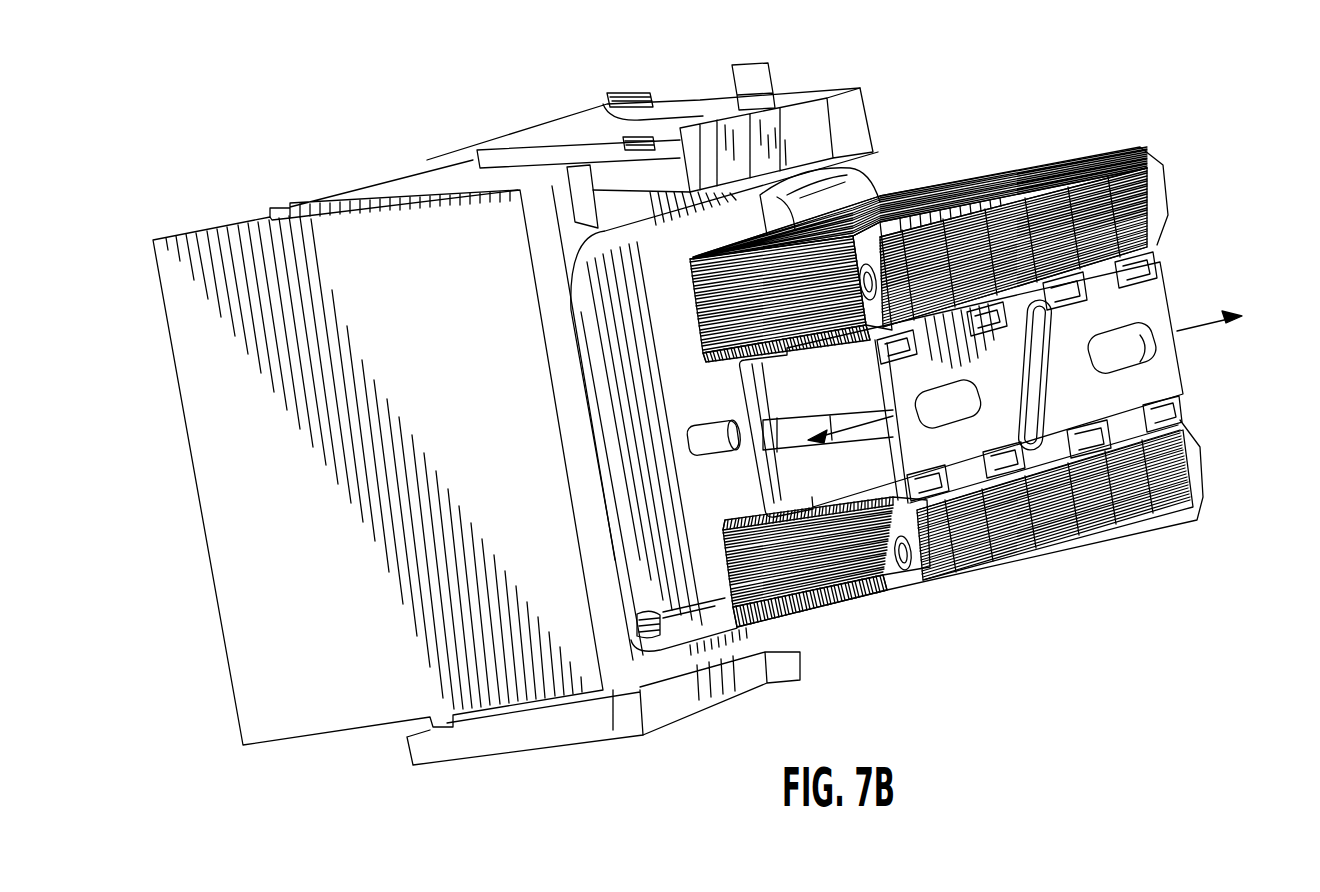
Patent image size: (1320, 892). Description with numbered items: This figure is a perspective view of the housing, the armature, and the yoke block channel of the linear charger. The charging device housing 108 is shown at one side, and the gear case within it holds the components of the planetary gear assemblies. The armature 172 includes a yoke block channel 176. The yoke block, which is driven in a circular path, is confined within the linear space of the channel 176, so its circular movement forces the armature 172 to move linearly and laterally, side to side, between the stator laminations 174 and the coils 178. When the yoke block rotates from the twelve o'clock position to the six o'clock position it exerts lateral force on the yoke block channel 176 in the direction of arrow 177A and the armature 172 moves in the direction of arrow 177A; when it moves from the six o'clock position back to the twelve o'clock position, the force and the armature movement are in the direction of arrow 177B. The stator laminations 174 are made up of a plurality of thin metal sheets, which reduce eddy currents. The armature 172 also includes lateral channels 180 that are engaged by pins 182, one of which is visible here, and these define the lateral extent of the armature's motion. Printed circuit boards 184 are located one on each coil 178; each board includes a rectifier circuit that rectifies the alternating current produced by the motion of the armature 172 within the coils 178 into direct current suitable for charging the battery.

The charging device housing 108 is at (216, 443).
The armature 172 is at (867, 490).
The stator laminations 174 is at (1005, 168).
The yoke block channel 176 is at (1027, 352).
The arrow 177A is at (1200, 333).
The arrow 177B is at (867, 420).
The coils 178 is at (1160, 197).
The lateral channels 180 is at (975, 487).
The pins 182 is at (713, 430).
The printed circuit boards 184 is at (910, 253).